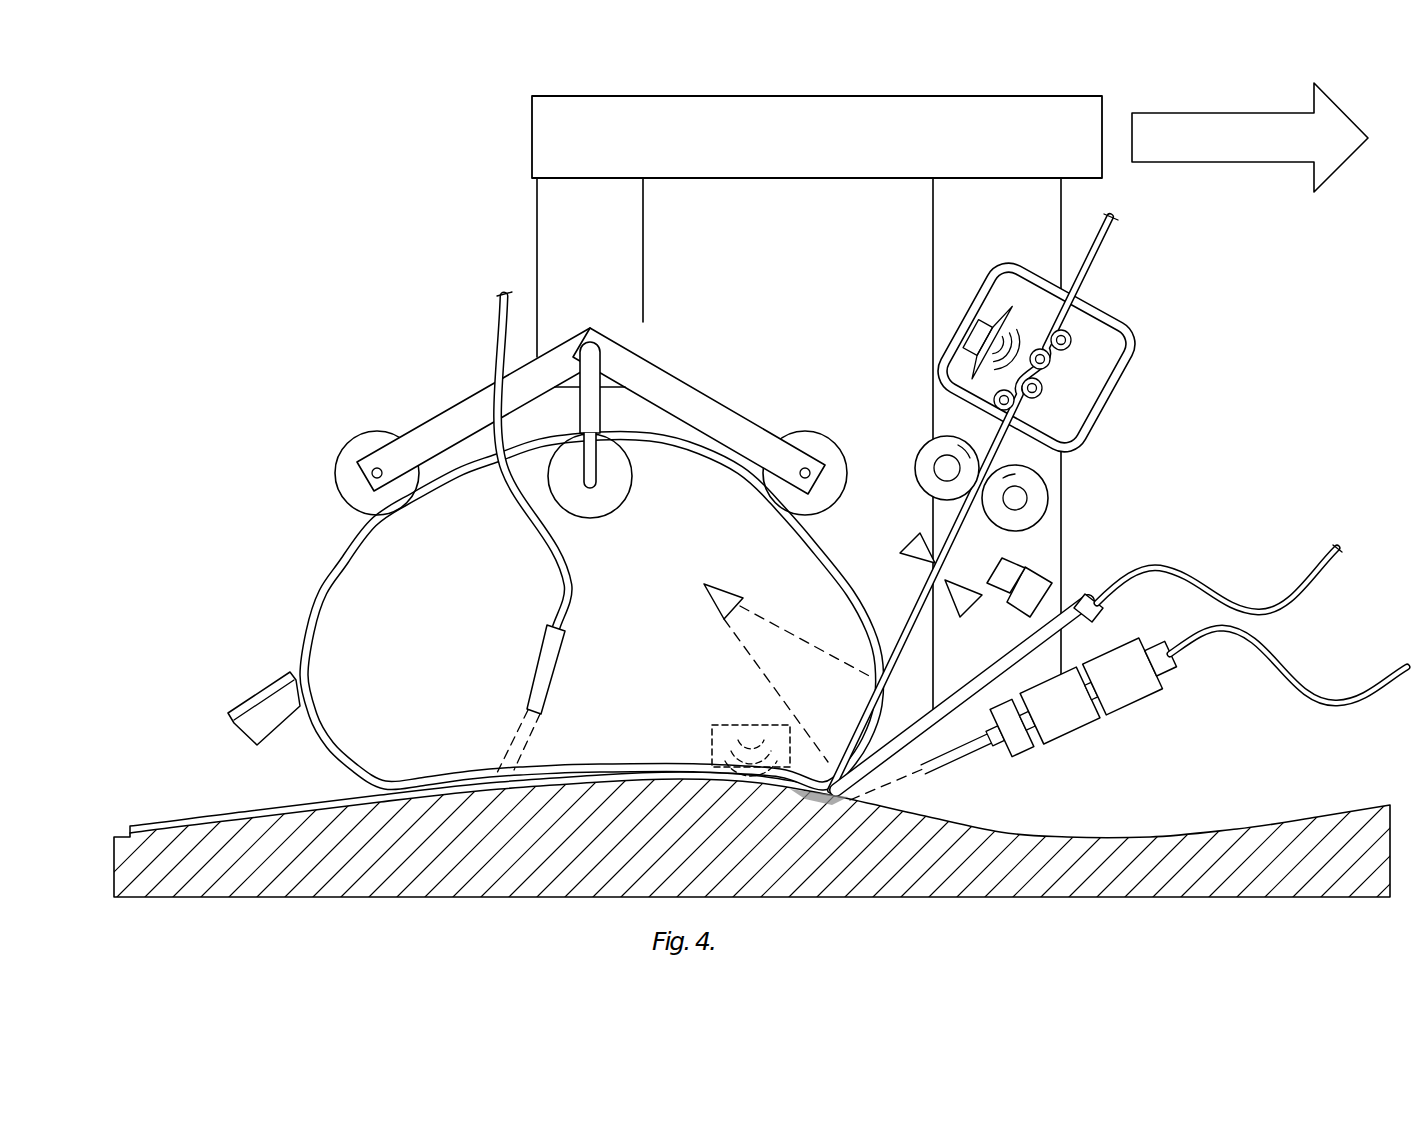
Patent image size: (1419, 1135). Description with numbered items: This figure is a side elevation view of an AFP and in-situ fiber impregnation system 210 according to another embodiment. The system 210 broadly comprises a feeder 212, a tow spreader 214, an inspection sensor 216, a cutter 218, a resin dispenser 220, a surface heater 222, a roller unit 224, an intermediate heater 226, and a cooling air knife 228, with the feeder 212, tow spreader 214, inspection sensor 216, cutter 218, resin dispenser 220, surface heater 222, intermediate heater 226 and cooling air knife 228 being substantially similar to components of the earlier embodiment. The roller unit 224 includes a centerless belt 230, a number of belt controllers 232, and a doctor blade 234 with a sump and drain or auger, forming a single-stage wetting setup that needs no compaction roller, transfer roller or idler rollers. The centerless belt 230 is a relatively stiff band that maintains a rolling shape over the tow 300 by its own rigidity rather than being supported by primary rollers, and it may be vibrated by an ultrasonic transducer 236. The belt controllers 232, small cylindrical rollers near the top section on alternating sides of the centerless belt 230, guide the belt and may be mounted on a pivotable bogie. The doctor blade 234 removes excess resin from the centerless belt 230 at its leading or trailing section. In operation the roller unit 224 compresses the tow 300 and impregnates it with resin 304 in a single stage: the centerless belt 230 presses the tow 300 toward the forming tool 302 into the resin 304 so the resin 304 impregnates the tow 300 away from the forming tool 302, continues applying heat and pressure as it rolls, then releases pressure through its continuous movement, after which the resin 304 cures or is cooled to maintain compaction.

The AFP and in-situ fiber impregnation system 210 is at (483, 97).
The roller unit 224 is at (415, 378).
The belt controllers 232 is at (816, 448).
The centerless belt 230 is at (338, 568).
The cooling air knife 228 is at (550, 652).
The intermediate heater 226 is at (735, 585).
The ultrasonic transducer 236 is at (735, 727).
The doctor blade 234 is at (255, 697).
The tow 300 is at (1103, 247).
The tow spreader 214 is at (1147, 338).
The feeder 212 is at (1060, 487).
The cutter 218 is at (918, 545).
The inspection sensor 216 is at (1036, 583).
The resin dispenser 220 is at (1102, 582).
The surface heater 222 is at (1077, 741).
The forming tool 302 is at (1270, 847).
The resin 304 is at (823, 803).